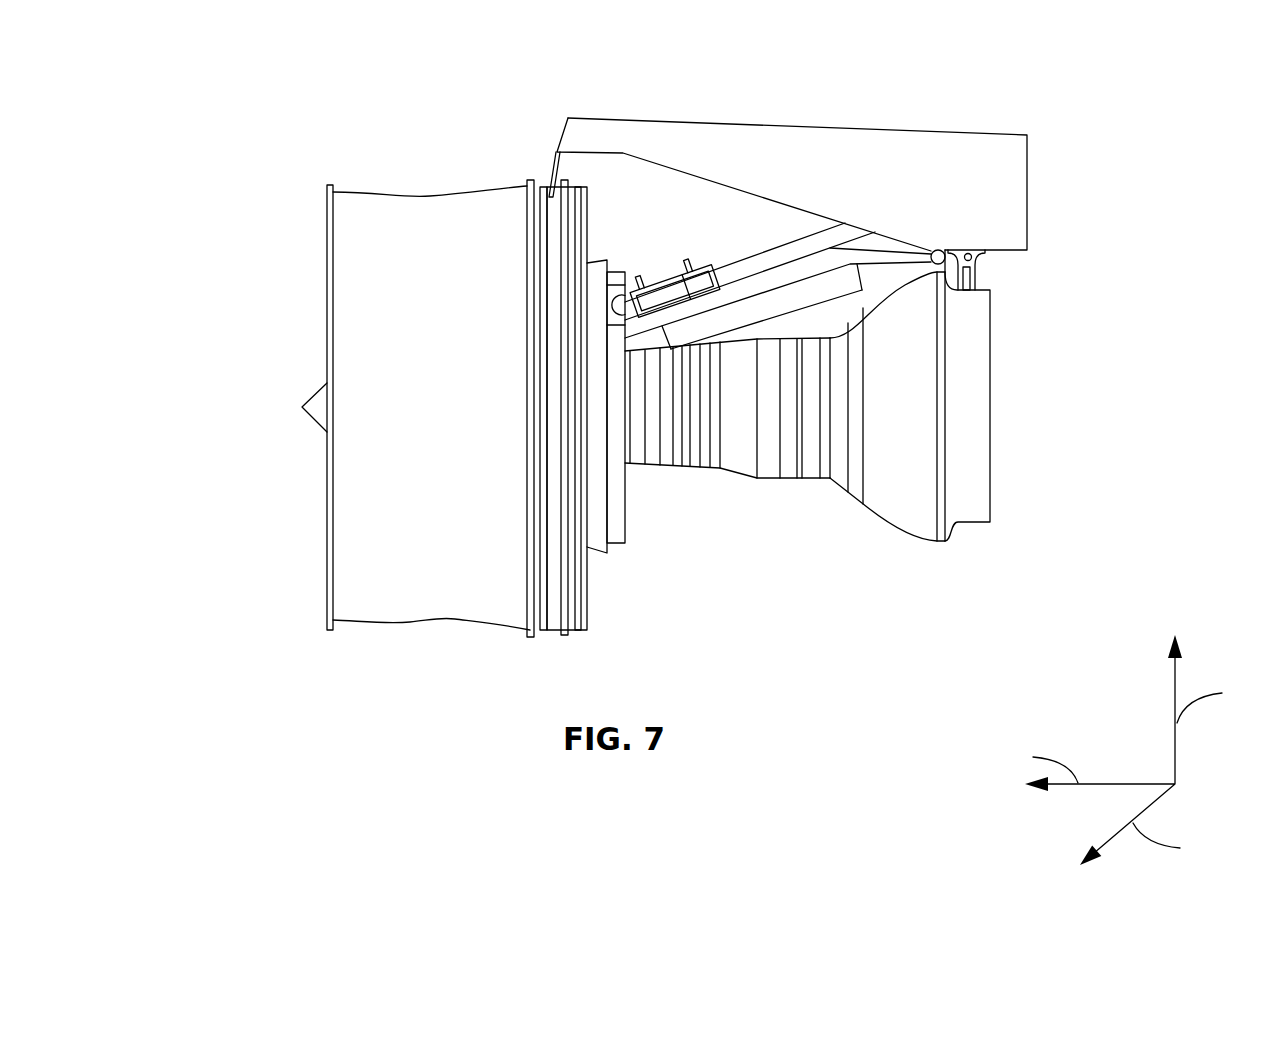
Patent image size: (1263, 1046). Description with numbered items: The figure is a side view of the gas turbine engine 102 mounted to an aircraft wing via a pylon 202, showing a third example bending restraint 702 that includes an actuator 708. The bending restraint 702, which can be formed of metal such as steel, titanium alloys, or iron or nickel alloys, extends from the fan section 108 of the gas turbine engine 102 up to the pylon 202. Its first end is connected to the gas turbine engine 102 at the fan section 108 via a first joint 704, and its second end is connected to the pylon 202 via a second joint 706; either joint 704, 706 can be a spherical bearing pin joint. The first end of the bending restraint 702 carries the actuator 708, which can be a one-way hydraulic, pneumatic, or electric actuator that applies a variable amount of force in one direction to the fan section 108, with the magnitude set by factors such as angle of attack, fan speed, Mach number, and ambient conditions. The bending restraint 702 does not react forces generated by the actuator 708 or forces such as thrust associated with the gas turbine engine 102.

The gas turbine engine 102 is at (200, 90).
The fan section 108 is at (328, 297).
The pylon 202 is at (887, 130).
The bending restraint 702 is at (808, 233).
The first joint 704 is at (610, 273).
The second joint 706 is at (863, 222).
The actuator 708 is at (658, 282).